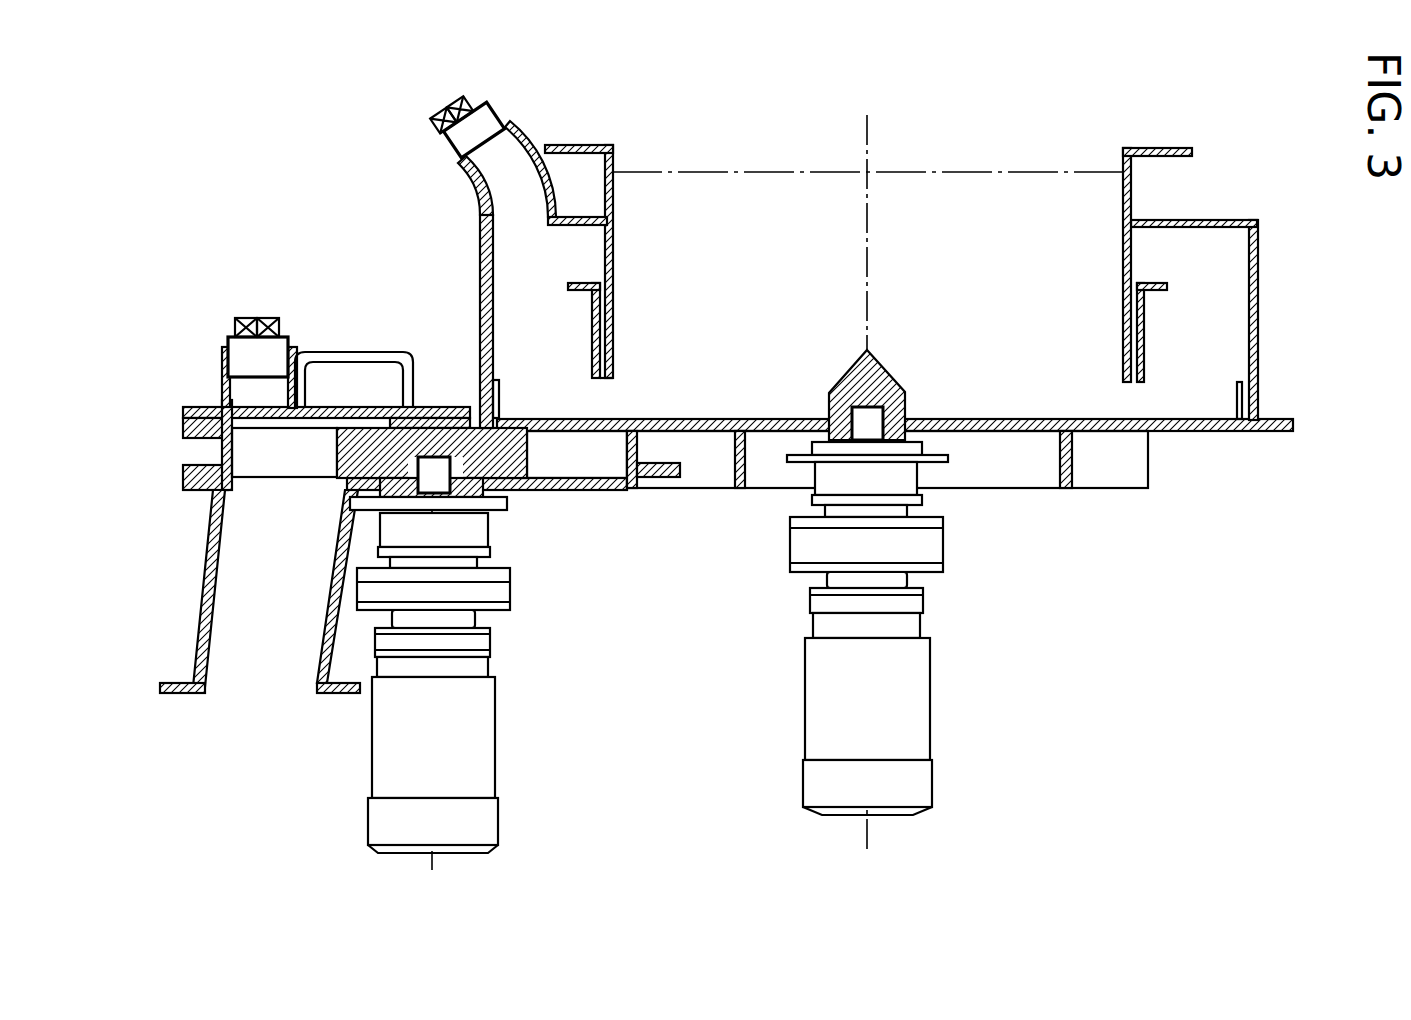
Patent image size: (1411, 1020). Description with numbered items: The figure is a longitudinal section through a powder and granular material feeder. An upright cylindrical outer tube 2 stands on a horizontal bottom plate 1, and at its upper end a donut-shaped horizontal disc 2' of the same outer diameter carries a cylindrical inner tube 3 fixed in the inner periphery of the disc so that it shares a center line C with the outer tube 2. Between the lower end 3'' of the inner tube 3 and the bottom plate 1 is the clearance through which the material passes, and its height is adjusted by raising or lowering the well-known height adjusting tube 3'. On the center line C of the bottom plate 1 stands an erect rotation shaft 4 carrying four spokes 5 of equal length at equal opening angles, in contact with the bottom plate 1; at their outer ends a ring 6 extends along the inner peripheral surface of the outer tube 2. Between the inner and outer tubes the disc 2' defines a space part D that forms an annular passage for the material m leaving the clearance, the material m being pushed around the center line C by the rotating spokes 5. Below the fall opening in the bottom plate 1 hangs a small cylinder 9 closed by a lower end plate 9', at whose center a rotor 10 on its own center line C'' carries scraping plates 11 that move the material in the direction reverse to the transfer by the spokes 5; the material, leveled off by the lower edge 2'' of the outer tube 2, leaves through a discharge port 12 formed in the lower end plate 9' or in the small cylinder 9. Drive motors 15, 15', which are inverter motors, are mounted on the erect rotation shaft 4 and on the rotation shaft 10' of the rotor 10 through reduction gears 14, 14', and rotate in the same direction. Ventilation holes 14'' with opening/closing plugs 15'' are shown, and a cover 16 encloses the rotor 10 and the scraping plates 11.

The horizontal bottom plate 1 is at (988, 440).
The cylindrical outer tube 2 is at (865, 321).
The donut-shaped horizontal disc 2' is at (1190, 265).
The lower edge of the outer tube 2'' is at (330, 354).
The cylindrical inner tube 3 is at (856, 263).
The height adjusting tube 3' is at (608, 330).
The lower end of the inner tube 3'' is at (643, 352).
The erect rotation shaft 4 is at (888, 392).
The spokes 5 is at (572, 418).
The ring 6 is at (482, 356).
The small cylinder 9 is at (887, 438).
The lower end plate 9' is at (487, 506).
The rotor 10 is at (454, 453).
The rotation shaft of the rotor 10' is at (453, 500).
The scraping plates 11 is at (298, 468).
The discharge port 12 is at (290, 595).
The reduction gear 14 is at (886, 507).
The reduction gear 14' is at (461, 561).
The ventilation holes 14'' is at (369, 264).
The drive motor 15 is at (887, 693).
The drive motor 15' is at (463, 731).
The opening/closing plugs 15'' is at (352, 232).
The cover 16 is at (427, 402).
The center line C is at (867, 484).
The center line of the rotor C'' is at (454, 662).
The space part D is at (552, 347).
The powder and granular material m is at (612, 386).